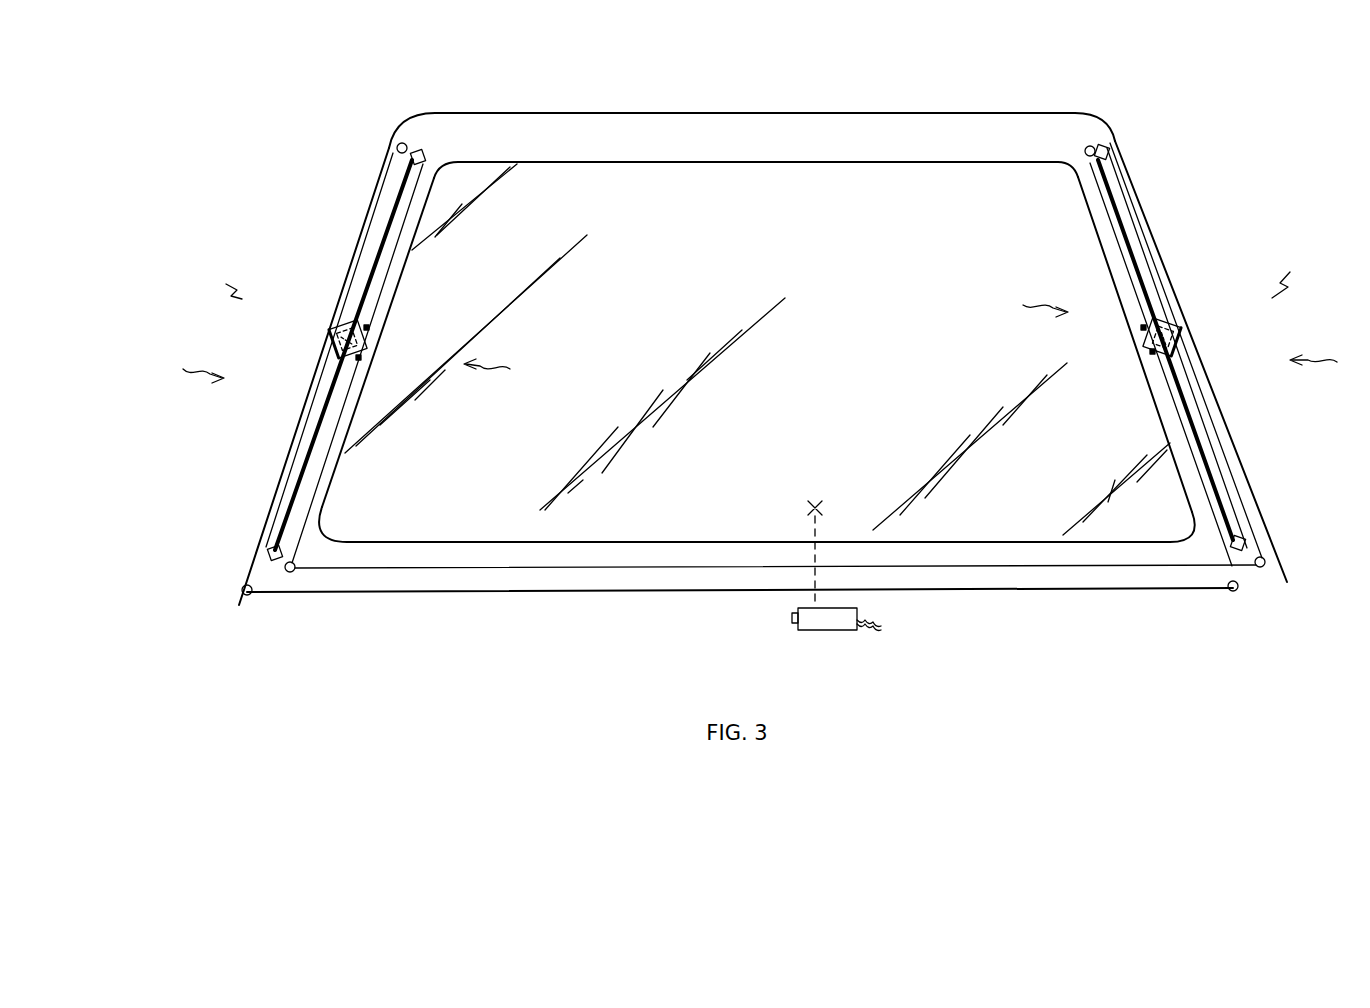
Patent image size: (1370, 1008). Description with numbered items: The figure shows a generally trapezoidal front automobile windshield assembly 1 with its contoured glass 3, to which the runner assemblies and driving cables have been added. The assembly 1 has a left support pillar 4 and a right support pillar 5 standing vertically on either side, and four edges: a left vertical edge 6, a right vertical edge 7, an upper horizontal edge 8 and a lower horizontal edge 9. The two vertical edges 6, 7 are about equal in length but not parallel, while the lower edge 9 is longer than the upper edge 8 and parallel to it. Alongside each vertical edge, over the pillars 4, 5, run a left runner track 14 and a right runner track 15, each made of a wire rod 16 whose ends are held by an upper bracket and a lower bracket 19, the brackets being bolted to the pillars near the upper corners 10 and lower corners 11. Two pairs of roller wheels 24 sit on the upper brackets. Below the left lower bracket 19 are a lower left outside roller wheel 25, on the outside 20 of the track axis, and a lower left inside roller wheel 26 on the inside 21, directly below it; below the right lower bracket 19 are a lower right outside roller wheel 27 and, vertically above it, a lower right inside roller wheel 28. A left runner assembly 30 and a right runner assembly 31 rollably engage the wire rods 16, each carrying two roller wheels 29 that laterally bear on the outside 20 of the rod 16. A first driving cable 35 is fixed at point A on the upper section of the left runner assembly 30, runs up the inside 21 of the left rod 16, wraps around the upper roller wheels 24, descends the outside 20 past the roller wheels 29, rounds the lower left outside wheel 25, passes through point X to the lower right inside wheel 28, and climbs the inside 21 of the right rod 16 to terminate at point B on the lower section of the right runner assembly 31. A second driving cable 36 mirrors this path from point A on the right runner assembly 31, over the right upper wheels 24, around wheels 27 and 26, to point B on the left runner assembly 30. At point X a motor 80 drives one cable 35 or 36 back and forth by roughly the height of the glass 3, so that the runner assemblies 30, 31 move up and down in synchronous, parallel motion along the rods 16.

The windshield assembly 1 is at (780, 72).
The contoured glass 3 is at (767, 384).
The left support pillar 4 is at (1130, 178).
The right support pillar 5 is at (377, 195).
The left vertical edge 6 is at (1100, 250).
The right vertical edge 7 is at (400, 296).
The upper horizontal edge 8 is at (720, 165).
The lower horizontal edge 9 is at (625, 537).
The upper corners 10 is at (462, 178).
The lower corners 11 is at (337, 528).
The left runner track 14 is at (1291, 274).
The right runner track 15 is at (216, 285).
The wire rod 16 is at (327, 413).
The lower bracket 19 is at (268, 548).
The outside 20 is at (756, 367).
The inside 21 is at (766, 337).
The roller wheels 24 is at (425, 152).
The lower left outside roller wheel 25 is at (1266, 560).
The lower left inside roller wheel 26 is at (1237, 590).
The lower right outside roller wheel 27 is at (250, 596).
The lower right inside roller wheel 28 is at (296, 565).
The roller wheels 29 is at (343, 318).
The left runner assembly 30 is at (1180, 330).
The right runner assembly 31 is at (334, 328).
The first driving cable 35 is at (320, 470).
The second driving cable 36 is at (367, 235).
The motor 80 is at (840, 622).
The point A is at (372, 329).
The point B is at (364, 354).